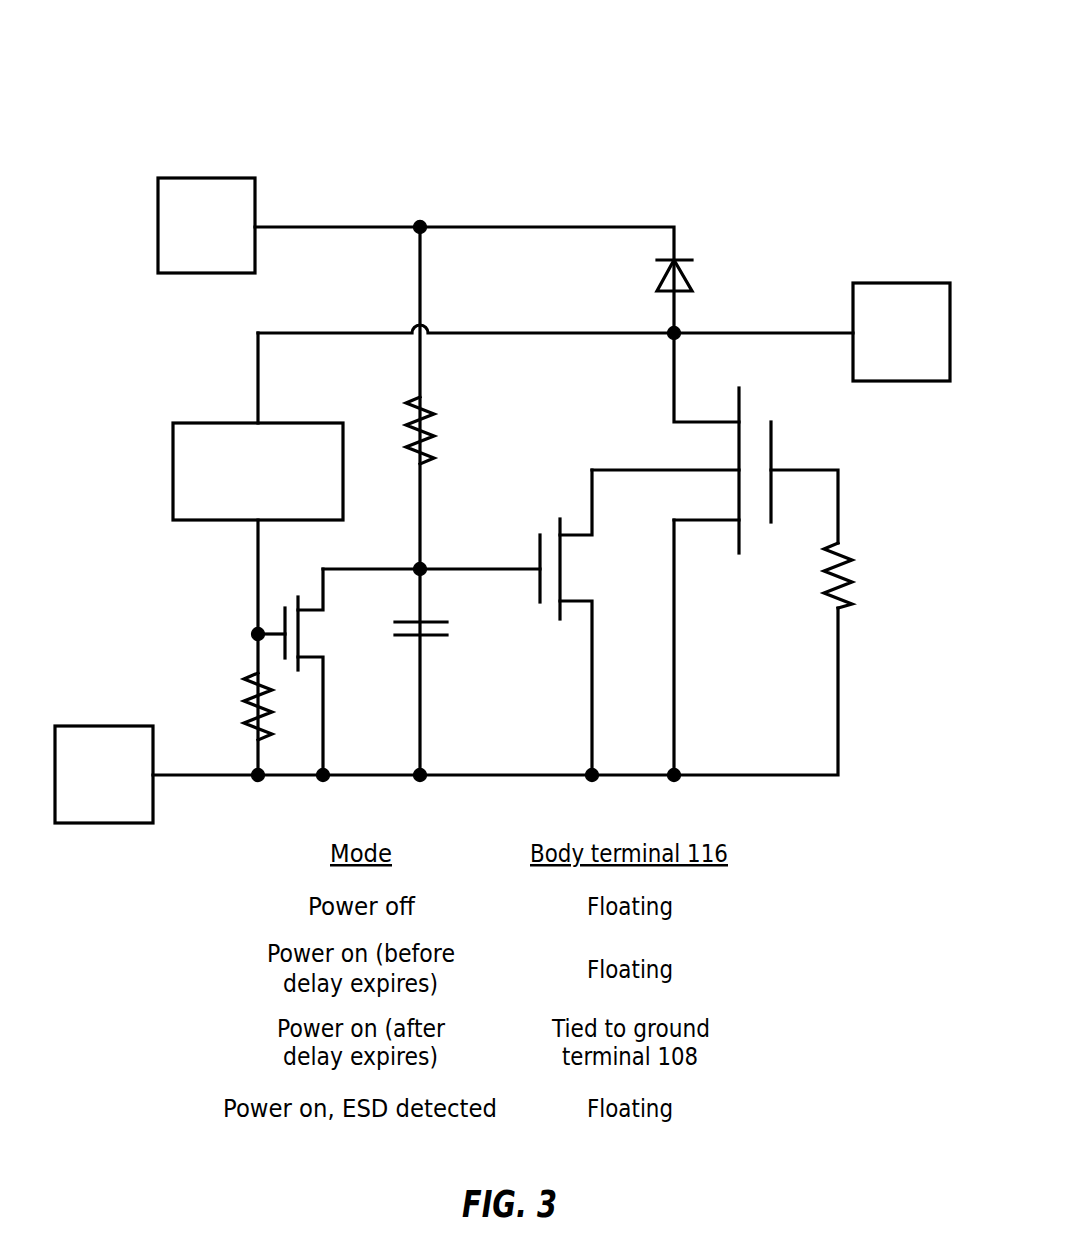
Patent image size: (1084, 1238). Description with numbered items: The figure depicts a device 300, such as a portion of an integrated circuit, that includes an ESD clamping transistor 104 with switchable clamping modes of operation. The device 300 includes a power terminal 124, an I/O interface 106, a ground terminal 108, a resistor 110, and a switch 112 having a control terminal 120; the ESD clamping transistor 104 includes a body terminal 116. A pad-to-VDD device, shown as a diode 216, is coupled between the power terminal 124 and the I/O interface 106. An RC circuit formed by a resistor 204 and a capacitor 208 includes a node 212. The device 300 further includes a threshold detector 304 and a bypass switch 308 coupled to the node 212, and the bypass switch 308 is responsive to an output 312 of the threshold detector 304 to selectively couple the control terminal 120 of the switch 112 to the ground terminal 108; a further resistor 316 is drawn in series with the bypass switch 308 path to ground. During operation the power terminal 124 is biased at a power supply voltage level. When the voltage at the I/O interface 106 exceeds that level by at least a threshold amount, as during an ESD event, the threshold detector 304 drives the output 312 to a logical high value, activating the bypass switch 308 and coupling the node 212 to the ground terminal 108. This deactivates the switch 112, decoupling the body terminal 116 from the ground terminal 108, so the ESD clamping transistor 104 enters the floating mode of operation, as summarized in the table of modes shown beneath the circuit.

The device 300 is at (757, 61).
The power terminal 124 is at (207, 177).
The I/O interface 106 is at (884, 283).
The ground terminal 108 is at (118, 726).
The threshold detector 304 is at (210, 423).
The output 312 is at (258, 568).
The bypass switch 308 is at (303, 648).
The resistor 316 is at (250, 678).
The resistor 204 is at (432, 413).
The capacitor 208 is at (437, 637).
The node 212 is at (418, 563).
The diode 216 is at (660, 285).
The control terminal 120 is at (513, 566).
The switch 112 is at (560, 517).
The body terminal 116 is at (690, 468).
The ESD clamping transistor 104 is at (772, 425).
The resistor 110 is at (850, 556).